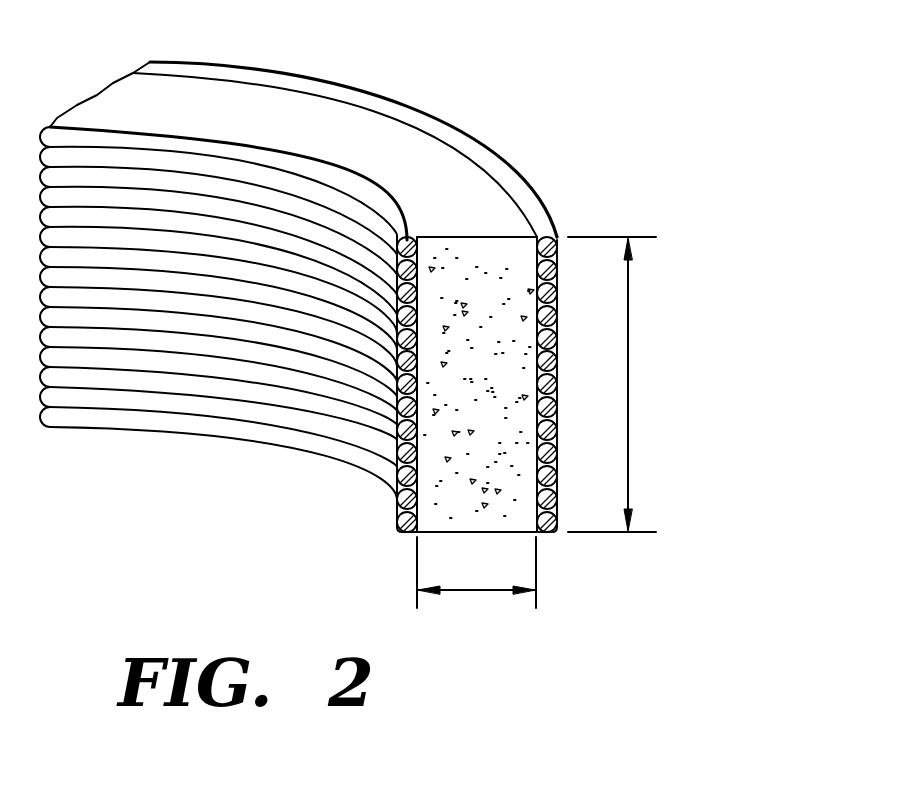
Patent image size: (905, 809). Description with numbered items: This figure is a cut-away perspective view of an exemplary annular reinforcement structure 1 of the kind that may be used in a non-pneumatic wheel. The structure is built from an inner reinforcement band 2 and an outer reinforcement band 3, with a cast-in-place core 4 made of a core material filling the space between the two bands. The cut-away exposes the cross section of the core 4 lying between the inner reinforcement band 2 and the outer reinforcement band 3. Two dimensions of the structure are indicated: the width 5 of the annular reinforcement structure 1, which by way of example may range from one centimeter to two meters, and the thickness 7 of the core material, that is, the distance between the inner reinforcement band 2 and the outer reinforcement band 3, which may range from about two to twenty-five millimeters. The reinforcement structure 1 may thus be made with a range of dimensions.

The annular reinforcement structure 1 is at (497, 78).
The inner reinforcement band 2 is at (227, 406).
The outer reinforcement band 3 is at (293, 76).
The cast-in-place core 4 is at (497, 255).
The width 5 is at (628, 363).
The thickness 7 is at (465, 590).